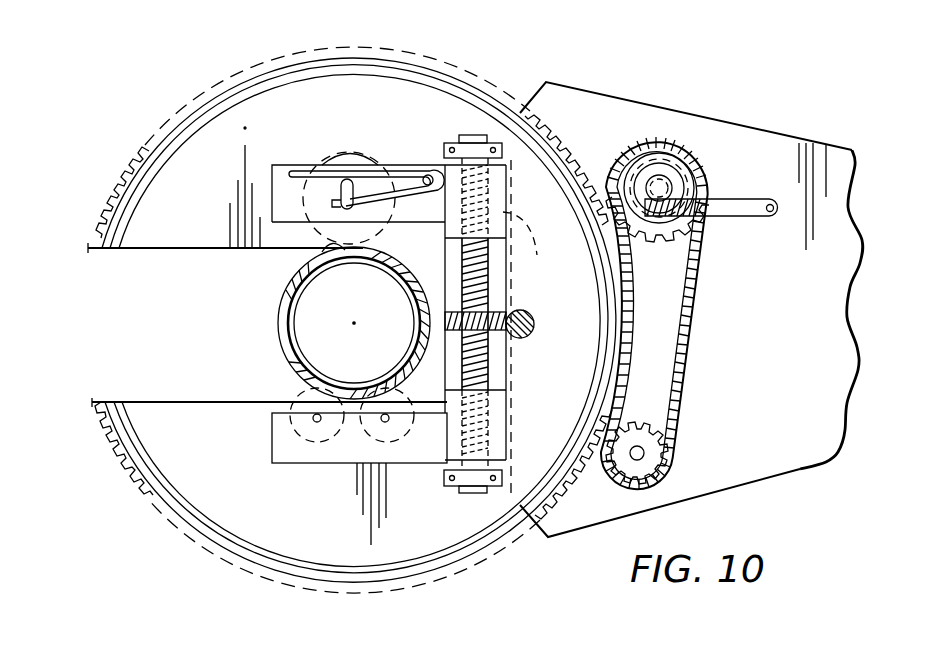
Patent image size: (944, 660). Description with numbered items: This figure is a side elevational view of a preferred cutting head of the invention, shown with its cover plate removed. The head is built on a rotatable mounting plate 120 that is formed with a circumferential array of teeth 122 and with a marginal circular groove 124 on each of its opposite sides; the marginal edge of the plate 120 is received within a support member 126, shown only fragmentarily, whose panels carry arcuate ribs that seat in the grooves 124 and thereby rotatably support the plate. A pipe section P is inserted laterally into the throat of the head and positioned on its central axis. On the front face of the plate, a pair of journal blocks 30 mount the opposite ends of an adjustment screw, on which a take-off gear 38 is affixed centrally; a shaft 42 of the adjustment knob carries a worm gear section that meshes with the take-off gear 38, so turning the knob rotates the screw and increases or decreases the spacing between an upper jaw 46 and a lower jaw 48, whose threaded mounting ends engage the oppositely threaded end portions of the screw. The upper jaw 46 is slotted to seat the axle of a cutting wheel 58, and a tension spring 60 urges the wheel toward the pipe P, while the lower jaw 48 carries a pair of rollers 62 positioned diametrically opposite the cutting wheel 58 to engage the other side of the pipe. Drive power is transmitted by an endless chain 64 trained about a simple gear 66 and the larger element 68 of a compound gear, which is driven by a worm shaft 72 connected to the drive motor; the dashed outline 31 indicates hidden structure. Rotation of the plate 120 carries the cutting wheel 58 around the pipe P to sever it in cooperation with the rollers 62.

The mounting plate 120 is at (216, 226).
The teeth 122 is at (563, 147).
The marginal circular groove 124 is at (168, 150).
The support member 126 is at (747, 116).
The upper jaw 46 is at (298, 167).
The tension spring 60 is at (392, 165).
The journal block 30 is at (453, 150).
The hidden outline 31 is at (510, 228).
The take-off gear 38 is at (497, 333).
The shaft 42 is at (536, 324).
The pipe section P is at (281, 343).
The cutting wheel 58 is at (333, 247).
The rollers 62 is at (384, 413).
The lower jaw 48 is at (322, 463).
The larger element of compound gear 68 is at (698, 177).
The worm shaft 72 is at (747, 207).
The endless chain 64 is at (692, 326).
The simple gear 66 is at (672, 460).